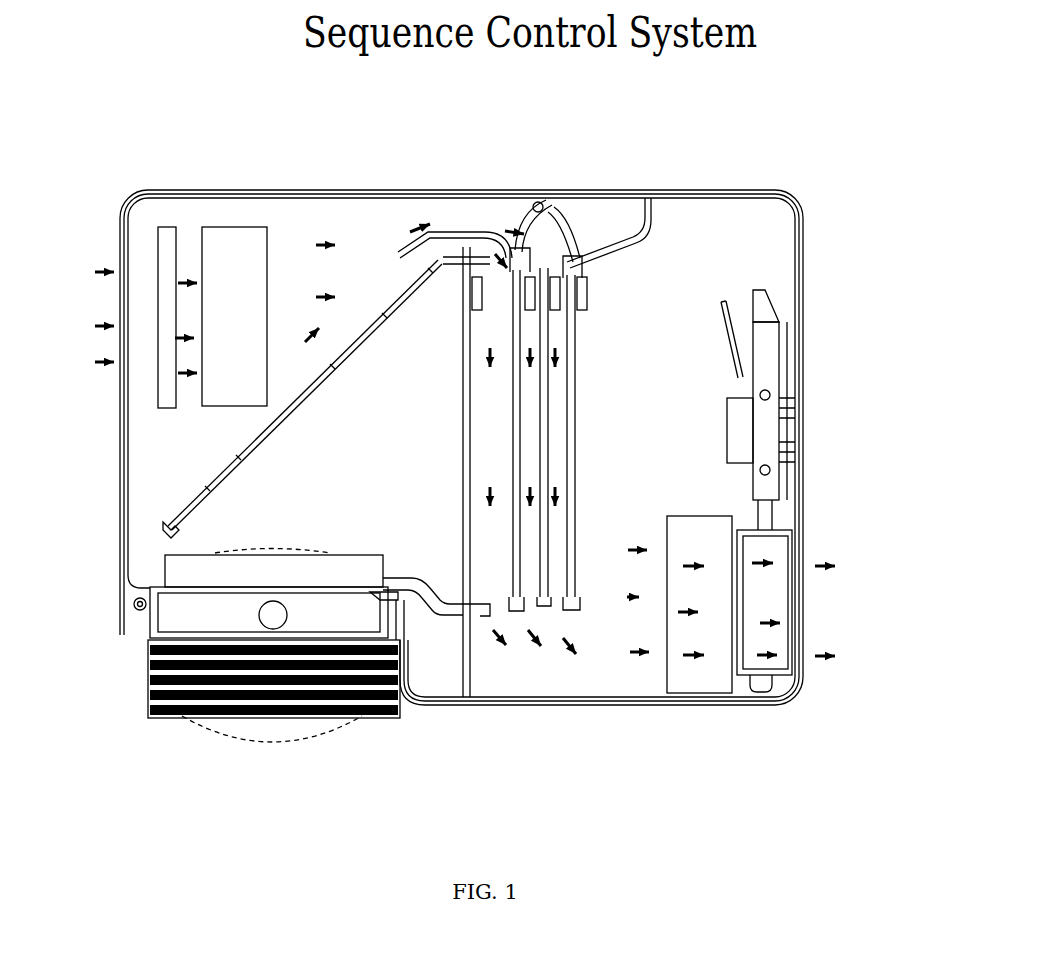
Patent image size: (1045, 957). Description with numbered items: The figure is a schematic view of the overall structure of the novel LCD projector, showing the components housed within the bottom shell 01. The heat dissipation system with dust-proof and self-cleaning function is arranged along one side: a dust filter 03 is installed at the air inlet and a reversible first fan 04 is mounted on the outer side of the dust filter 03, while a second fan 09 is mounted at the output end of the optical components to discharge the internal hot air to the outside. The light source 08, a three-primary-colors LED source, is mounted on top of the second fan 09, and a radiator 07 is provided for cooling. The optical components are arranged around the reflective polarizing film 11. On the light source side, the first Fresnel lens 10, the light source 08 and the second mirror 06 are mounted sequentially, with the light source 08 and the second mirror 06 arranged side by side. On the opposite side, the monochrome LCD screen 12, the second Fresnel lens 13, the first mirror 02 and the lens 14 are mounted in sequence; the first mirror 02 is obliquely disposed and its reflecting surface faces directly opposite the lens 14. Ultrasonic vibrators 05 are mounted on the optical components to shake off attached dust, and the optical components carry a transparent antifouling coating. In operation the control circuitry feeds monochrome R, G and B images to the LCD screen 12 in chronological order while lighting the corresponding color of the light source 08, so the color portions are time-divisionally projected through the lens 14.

The bottom shell 01 is at (136, 609).
The first mirror 02 is at (262, 443).
The filter 03 is at (165, 243).
The first fan 04 is at (232, 253).
The ultrasonic vibrators 05 is at (578, 290).
The second mirror 06 is at (731, 318).
The radiator 07 is at (767, 368).
The light source 08 is at (737, 441).
The second fan 09 is at (697, 608).
The first Fresnel lens 10 is at (575, 608).
The reflective polarizing film 11 is at (545, 605).
The LCD screen 12 is at (737, 433).
The second Fresnel lens 13 is at (466, 640).
The lens 14 is at (313, 587).